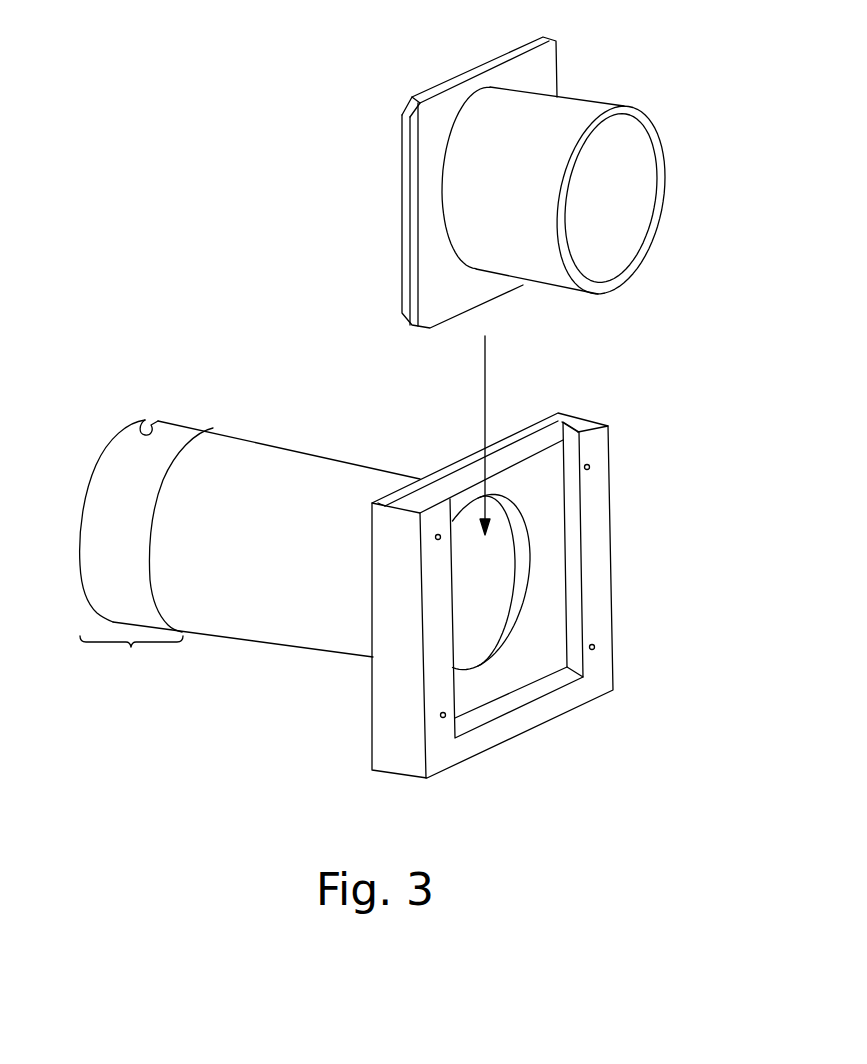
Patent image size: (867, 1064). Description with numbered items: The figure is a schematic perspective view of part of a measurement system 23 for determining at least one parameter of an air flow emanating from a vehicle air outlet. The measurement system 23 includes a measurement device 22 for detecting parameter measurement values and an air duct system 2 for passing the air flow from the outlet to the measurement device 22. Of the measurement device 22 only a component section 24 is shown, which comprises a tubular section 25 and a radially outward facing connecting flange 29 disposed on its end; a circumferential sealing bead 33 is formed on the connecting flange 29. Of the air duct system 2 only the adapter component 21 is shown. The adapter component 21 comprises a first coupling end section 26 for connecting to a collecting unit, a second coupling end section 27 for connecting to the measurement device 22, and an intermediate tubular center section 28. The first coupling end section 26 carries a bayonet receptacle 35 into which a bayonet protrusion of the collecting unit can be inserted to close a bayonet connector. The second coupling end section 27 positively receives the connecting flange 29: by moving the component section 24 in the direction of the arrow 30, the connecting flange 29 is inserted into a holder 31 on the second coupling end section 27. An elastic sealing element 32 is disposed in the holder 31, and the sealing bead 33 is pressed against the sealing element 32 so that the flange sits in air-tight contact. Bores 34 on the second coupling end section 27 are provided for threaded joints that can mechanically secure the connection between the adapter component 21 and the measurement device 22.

The air duct system 2 is at (250, 546).
The adapter component 21 is at (250, 518).
The measurement device 22 is at (593, 149).
The measurement system 23 is at (505, 166).
The component section 24 is at (598, 100).
The tubular section 25 is at (637, 222).
The first coupling end section 26 is at (146, 555).
The second coupling end section 27 is at (547, 595).
The tubular center section 28 is at (265, 617).
The connecting flange 29 is at (438, 106).
The arrow 30 is at (488, 364).
The holder 31 is at (540, 617).
The elastic sealing element 32 is at (548, 563).
The circumferential sealing bead 33 is at (401, 172).
The bores 34 is at (592, 467).
The bayonet receptacle 35 is at (148, 424).